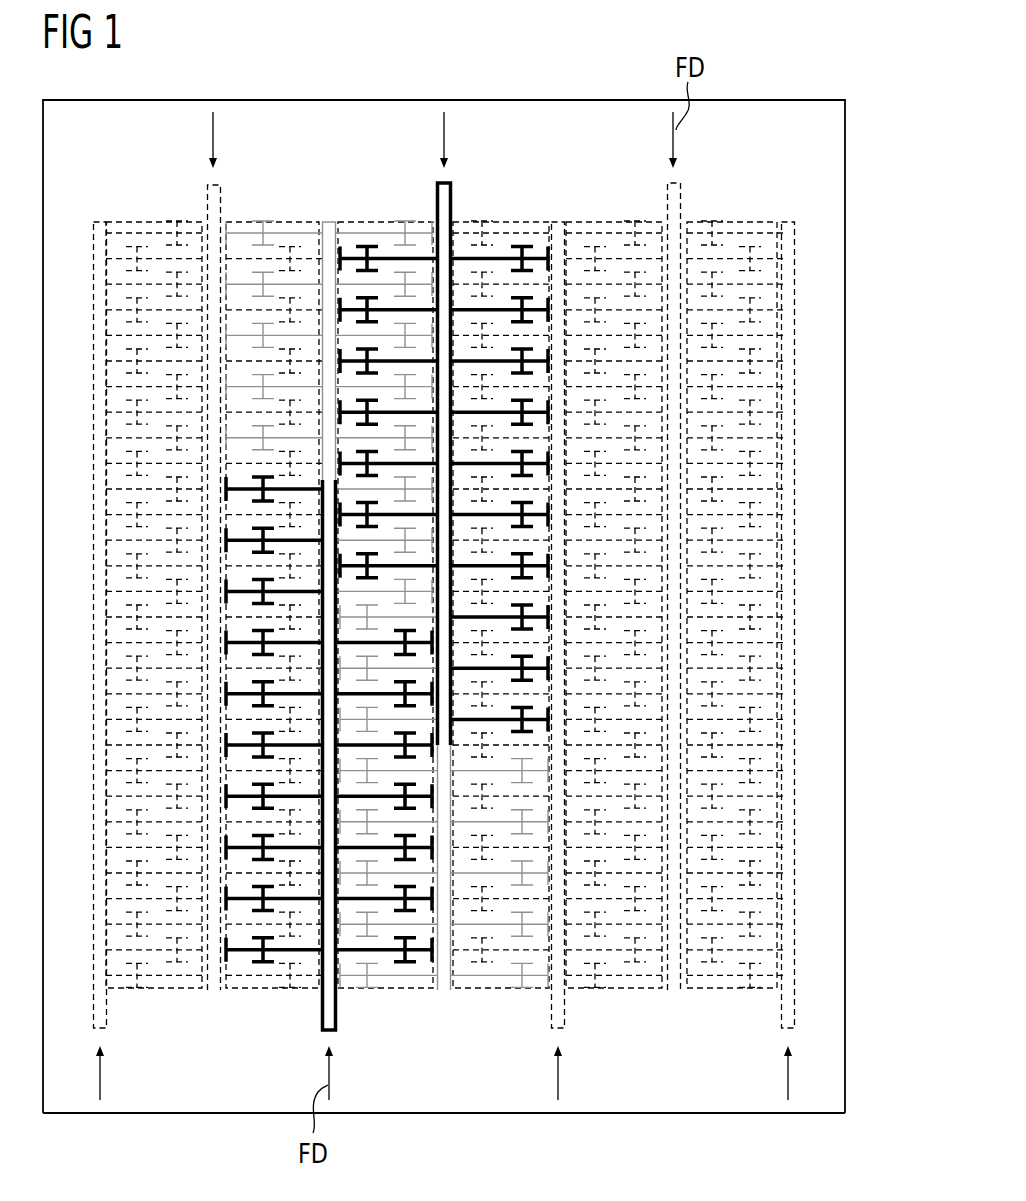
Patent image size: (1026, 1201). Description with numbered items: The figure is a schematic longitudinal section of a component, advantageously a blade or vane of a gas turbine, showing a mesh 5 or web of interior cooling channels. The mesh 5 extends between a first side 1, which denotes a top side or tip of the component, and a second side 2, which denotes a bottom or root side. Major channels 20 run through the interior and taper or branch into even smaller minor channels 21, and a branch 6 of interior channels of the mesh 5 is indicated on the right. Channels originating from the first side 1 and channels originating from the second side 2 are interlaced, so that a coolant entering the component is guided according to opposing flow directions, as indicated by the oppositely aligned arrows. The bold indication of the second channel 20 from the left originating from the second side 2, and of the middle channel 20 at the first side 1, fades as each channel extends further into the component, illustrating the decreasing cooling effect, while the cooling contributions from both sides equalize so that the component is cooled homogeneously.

The first side 1 is at (510, 100).
The second side 2 is at (494, 1113).
The mesh 5 is at (790, 341).
The branch 6 is at (778, 412).
The channels 20 is at (790, 820).
The smaller channels 21 is at (762, 900).